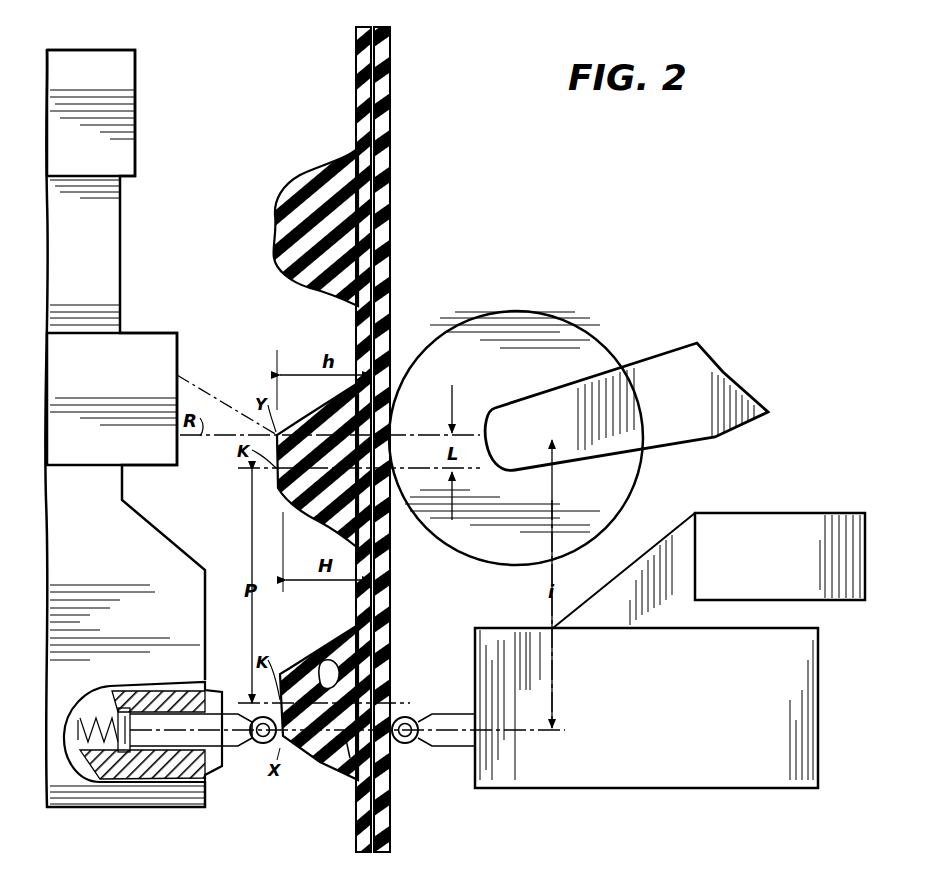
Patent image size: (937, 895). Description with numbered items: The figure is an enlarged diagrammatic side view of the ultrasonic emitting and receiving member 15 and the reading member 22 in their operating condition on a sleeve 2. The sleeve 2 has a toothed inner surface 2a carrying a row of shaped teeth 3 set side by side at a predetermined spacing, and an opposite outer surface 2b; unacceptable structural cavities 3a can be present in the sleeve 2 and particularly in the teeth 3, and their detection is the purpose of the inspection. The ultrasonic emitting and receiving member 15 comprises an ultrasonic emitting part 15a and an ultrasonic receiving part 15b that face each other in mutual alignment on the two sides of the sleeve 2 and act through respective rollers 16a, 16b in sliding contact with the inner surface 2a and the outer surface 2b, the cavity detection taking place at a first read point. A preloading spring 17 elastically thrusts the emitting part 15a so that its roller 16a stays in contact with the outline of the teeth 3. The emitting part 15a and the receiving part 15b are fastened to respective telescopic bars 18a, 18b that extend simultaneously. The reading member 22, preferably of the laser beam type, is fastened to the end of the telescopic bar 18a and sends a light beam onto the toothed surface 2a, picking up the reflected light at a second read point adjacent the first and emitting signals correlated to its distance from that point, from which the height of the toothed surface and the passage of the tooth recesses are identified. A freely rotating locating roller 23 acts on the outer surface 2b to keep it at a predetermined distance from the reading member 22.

The sleeve 2 is at (394, 101).
The toothed inner surface 2a is at (356, 326).
The outer surface 2b is at (390, 328).
The shaped teeth 3 is at (314, 196).
The structural cavities 3a is at (332, 660).
The ultrasonic emitting and receiving member 15 is at (158, 822).
The ultrasonic emitting part 15a is at (148, 548).
The ultrasonic receiving part 15b is at (600, 773).
The roller 16a is at (265, 744).
The roller 16b is at (403, 744).
The preloading spring 17 is at (98, 708).
The telescopic bar 18a is at (136, 80).
The telescopic bar 18b is at (716, 524).
The reading member 22 is at (138, 333).
The locating roller 23 is at (558, 338).